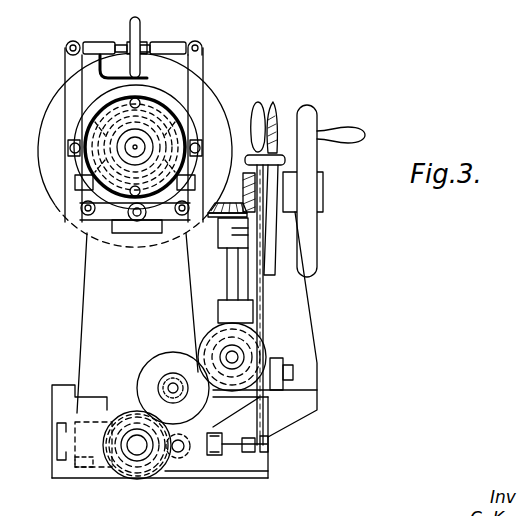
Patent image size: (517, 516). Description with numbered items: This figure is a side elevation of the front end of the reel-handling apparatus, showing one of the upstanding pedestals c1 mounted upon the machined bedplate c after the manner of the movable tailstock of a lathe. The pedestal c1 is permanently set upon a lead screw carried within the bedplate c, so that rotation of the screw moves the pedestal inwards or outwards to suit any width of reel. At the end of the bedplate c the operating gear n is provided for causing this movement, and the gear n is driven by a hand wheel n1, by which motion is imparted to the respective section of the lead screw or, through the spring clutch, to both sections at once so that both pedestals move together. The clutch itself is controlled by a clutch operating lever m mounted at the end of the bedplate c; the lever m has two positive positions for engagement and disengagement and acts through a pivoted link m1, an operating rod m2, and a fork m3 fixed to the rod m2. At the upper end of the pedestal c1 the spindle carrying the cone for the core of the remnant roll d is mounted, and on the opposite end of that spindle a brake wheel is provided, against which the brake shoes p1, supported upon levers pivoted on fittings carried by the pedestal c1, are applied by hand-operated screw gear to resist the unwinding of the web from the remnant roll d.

The brake shoes p1 is at (83, 114).
The remnant roll d is at (207, 95).
The upstanding pedestal c1 is at (137, 323).
The machined bedplate c is at (95, 420).
The operating gear n is at (200, 350).
The hand wheel n1 is at (300, 262).
The clutch operating lever m is at (278, 273).
The pivoted link m1 is at (268, 445).
The operating rod m2 is at (183, 452).
The fork m3 is at (143, 482).